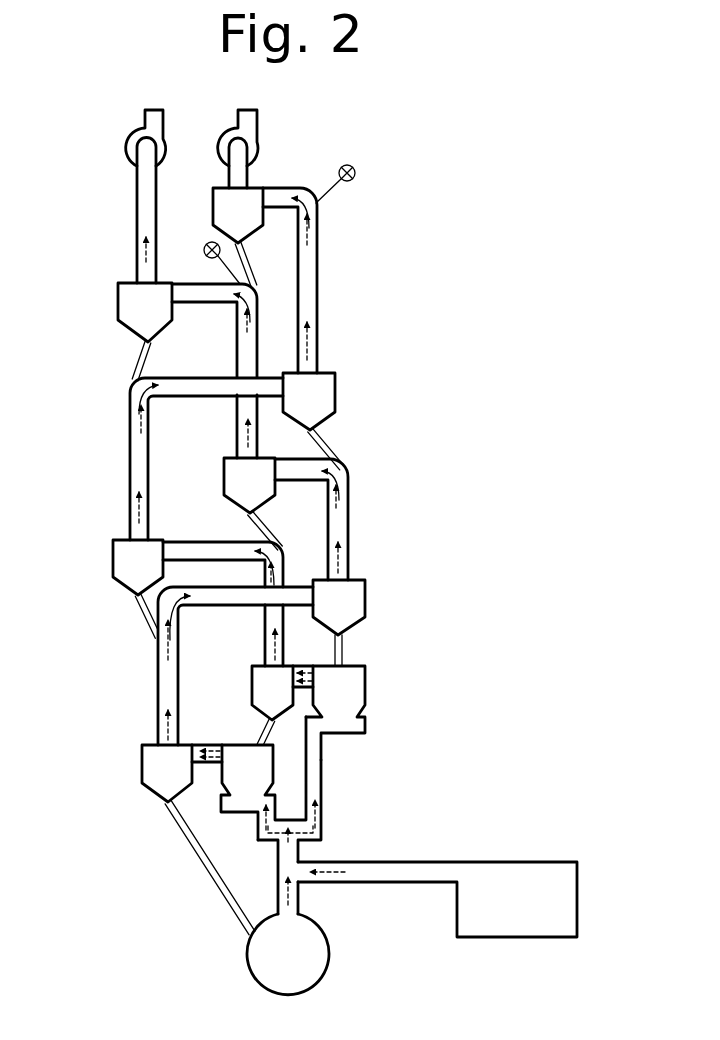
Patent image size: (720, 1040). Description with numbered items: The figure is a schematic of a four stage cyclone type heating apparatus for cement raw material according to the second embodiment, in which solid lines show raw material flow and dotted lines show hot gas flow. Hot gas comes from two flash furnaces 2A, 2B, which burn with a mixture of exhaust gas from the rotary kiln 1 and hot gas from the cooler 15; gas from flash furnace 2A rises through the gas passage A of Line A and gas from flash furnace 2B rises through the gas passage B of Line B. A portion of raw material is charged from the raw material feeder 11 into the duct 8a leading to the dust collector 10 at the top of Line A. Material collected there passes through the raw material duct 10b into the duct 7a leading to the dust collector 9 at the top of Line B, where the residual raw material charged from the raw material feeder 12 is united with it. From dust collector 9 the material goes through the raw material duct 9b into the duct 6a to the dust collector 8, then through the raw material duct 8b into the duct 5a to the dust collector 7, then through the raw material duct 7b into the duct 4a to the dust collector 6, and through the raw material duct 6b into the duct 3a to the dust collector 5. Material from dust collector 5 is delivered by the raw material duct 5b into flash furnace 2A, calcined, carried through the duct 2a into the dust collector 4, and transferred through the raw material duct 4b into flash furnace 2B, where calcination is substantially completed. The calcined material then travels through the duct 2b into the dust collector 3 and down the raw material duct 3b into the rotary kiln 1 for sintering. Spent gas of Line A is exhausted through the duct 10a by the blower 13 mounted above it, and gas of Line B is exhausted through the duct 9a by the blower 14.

The rotary kiln 1 is at (257, 940).
The flash furnace 2A is at (335, 747).
The flash furnace 2B is at (267, 778).
The duct 2a is at (305, 666).
The duct 2b is at (205, 745).
The dust collector 3 is at (167, 773).
The duct 3a is at (158, 698).
The raw material duct 3b is at (209, 872).
The dust collector 4 is at (272, 693).
The duct 4a is at (195, 541).
The raw material duct 4b is at (262, 731).
The dust collector 5 is at (339, 607).
The duct 5a is at (349, 538).
The raw material duct 5b is at (344, 644).
The dust collector 6 is at (138, 567).
The duct 6a is at (129, 453).
The raw material duct 6b is at (143, 614).
The dust collector 7 is at (249, 485).
The duct 7a is at (260, 333).
The raw material duct 7b is at (264, 529).
The dust collector 8 is at (309, 401).
The duct 8a is at (319, 303).
The raw material duct 8b is at (323, 440).
The dust collector 9 is at (145, 312).
The duct 9a is at (137, 244).
The raw material duct 9b is at (137, 366).
The dust collector 10 is at (238, 215).
The duct 10a is at (229, 172).
The raw material duct 10b is at (255, 272).
The raw material feeder 11 is at (354, 167).
The raw material feeder 12 is at (205, 245).
The blower 13 is at (258, 125).
The blower 14 is at (164, 128).
The cooler 15 is at (437, 899).
The gas passage in Line A is at (252, 167).
The gas passage in Line B is at (134, 180).